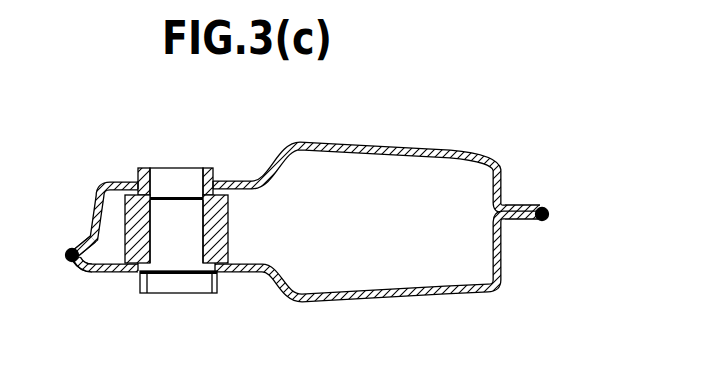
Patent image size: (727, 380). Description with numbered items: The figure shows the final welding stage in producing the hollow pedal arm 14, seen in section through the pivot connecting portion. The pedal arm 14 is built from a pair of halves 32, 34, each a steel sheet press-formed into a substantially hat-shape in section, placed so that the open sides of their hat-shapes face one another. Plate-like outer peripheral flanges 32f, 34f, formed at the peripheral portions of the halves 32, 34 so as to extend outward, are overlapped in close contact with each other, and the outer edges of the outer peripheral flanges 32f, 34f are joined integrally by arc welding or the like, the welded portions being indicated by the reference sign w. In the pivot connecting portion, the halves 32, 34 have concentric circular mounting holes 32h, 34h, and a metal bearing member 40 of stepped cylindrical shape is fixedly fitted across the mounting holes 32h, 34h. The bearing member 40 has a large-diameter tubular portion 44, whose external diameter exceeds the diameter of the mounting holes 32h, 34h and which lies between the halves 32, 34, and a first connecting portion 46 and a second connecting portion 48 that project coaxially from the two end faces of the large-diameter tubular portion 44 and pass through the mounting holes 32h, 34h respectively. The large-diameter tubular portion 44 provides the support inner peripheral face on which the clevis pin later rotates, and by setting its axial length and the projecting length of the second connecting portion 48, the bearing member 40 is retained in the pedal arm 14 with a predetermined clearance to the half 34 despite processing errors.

The pedal arm 14 is at (303, 207).
The half 32 is at (371, 302).
The outer peripheral flange 32f is at (83, 264).
The mounting hole 32h is at (201, 278).
The half 34 is at (356, 142).
The outer peripheral flange 34f is at (90, 248).
The mounting hole 34h is at (148, 182).
The bearing member 40 is at (180, 223).
The large-diameter tubular portion 44 is at (218, 236).
The first connecting portion 46 is at (140, 284).
The second connecting portion 48 is at (208, 180).
The welded portion w is at (66, 257).